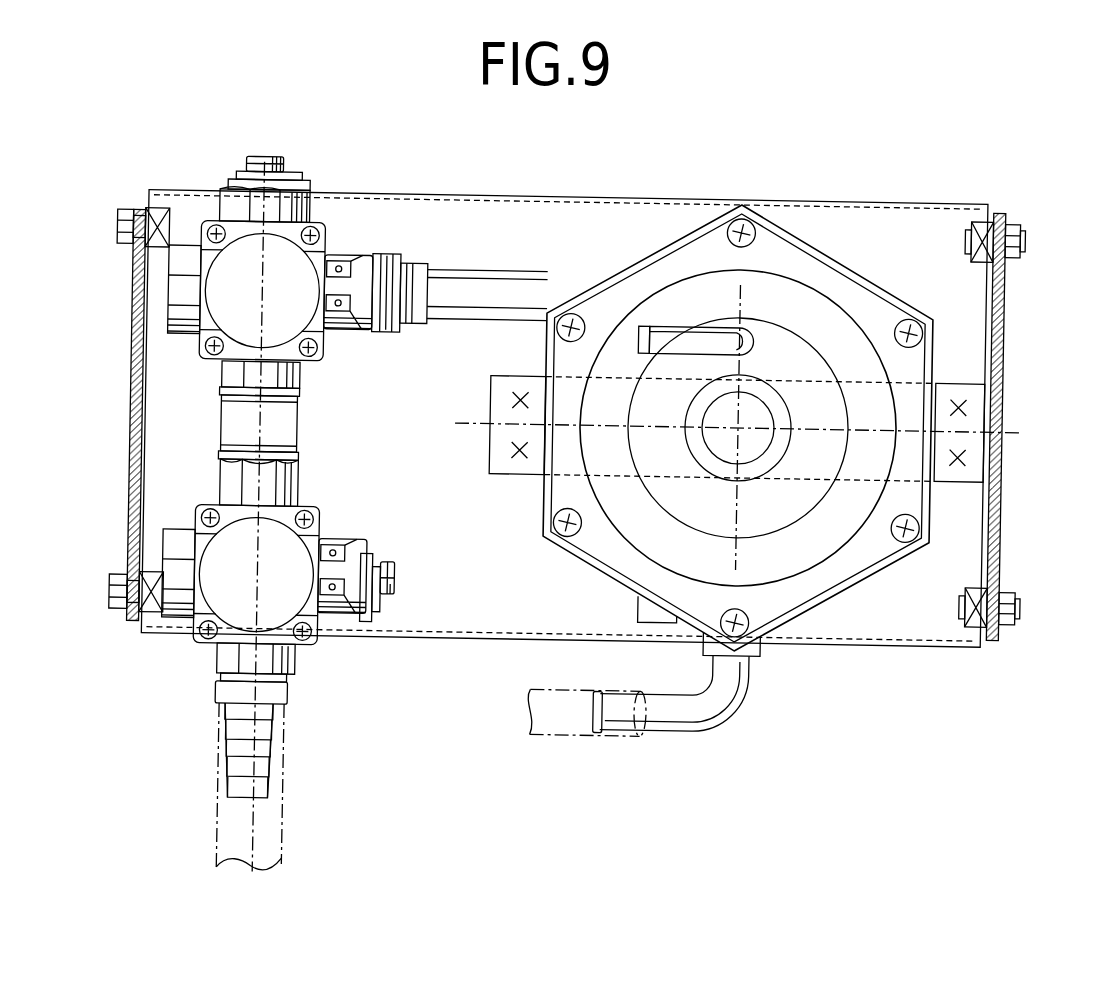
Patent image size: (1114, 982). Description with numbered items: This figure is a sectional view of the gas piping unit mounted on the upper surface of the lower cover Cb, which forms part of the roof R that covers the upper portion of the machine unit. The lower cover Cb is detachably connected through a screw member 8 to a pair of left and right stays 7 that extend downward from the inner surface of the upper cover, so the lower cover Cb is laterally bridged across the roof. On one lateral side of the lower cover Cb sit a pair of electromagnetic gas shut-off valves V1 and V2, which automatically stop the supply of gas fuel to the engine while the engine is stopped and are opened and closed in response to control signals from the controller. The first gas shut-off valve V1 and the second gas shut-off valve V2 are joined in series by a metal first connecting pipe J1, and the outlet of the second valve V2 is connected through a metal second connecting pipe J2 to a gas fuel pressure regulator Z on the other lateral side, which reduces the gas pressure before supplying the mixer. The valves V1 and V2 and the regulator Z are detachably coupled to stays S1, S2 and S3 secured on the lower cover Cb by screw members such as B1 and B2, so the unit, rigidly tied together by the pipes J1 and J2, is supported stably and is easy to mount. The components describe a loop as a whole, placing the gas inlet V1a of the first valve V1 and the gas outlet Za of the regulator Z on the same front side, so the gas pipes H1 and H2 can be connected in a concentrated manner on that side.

The roof R is at (881, 652).
The lower cover Cb is at (625, 192).
The gas fuel pressure regulator Z is at (838, 246).
The gas outlet Za is at (712, 722).
The gas pipe H2 is at (563, 737).
The gas pipe H1 is at (284, 828).
The stays 7 is at (145, 422).
The screw member 8 is at (118, 228).
The first gas shut-off valve V1 is at (327, 503).
The second gas shut-off valve V2 is at (331, 229).
The gas inlet V1a is at (235, 740).
The first connecting pipe J1 is at (287, 427).
The second connecting pipe J2 is at (523, 278).
The stay S1 is at (368, 612).
The stay S2 is at (301, 190).
The stay S3 is at (975, 406).
The screw member B1 is at (393, 576).
The screw member B2 is at (264, 160).